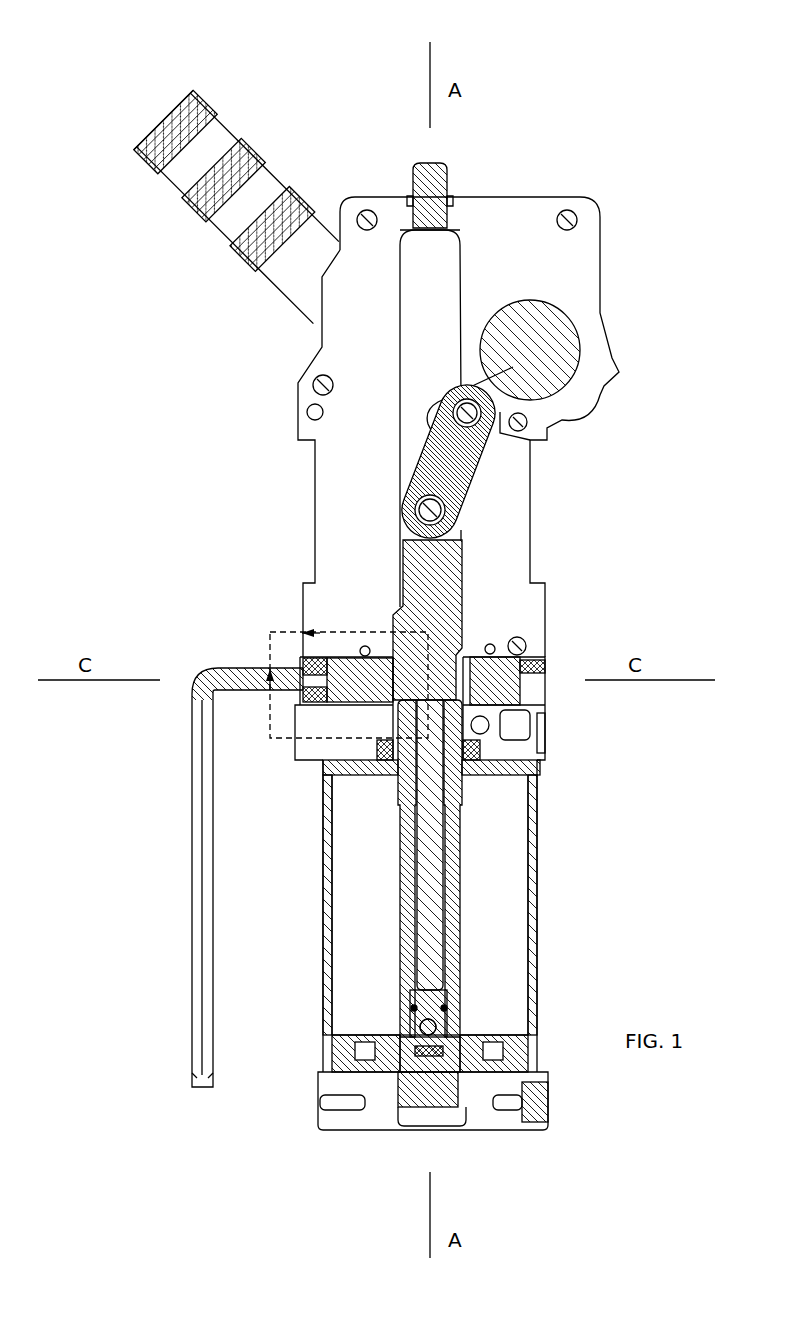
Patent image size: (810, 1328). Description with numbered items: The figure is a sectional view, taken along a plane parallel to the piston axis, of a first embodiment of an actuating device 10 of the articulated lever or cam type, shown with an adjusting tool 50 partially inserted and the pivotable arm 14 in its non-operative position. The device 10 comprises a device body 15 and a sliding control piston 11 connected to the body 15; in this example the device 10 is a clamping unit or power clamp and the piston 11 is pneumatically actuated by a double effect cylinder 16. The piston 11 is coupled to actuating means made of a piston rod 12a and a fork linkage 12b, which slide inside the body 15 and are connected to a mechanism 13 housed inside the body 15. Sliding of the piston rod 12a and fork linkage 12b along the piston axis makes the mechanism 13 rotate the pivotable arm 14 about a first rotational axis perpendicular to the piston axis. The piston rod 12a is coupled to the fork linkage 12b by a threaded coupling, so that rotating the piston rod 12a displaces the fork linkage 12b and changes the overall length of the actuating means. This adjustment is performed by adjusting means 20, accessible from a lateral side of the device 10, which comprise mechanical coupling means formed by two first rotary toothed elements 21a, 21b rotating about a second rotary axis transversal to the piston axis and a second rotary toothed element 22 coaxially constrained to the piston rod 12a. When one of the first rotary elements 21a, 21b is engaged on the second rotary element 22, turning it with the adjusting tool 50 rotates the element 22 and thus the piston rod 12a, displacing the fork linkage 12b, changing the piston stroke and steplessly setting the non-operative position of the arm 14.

The actuating device 10 is at (139, 52).
The sliding control piston 11 is at (538, 1043).
The piston rod 12a is at (460, 863).
The fork linkage 12b is at (442, 585).
The mechanism 13 is at (552, 372).
The pivotable arm 14 is at (237, 130).
The device body 15 is at (533, 508).
The double effect cylinder 16 is at (538, 947).
The adjusting means 20 is at (282, 653).
The first rotary toothed element 21a is at (348, 675).
The first rotary toothed element 21b is at (525, 697).
The second rotary toothed element 22 is at (400, 717).
The adjusting tool 50 is at (197, 880).